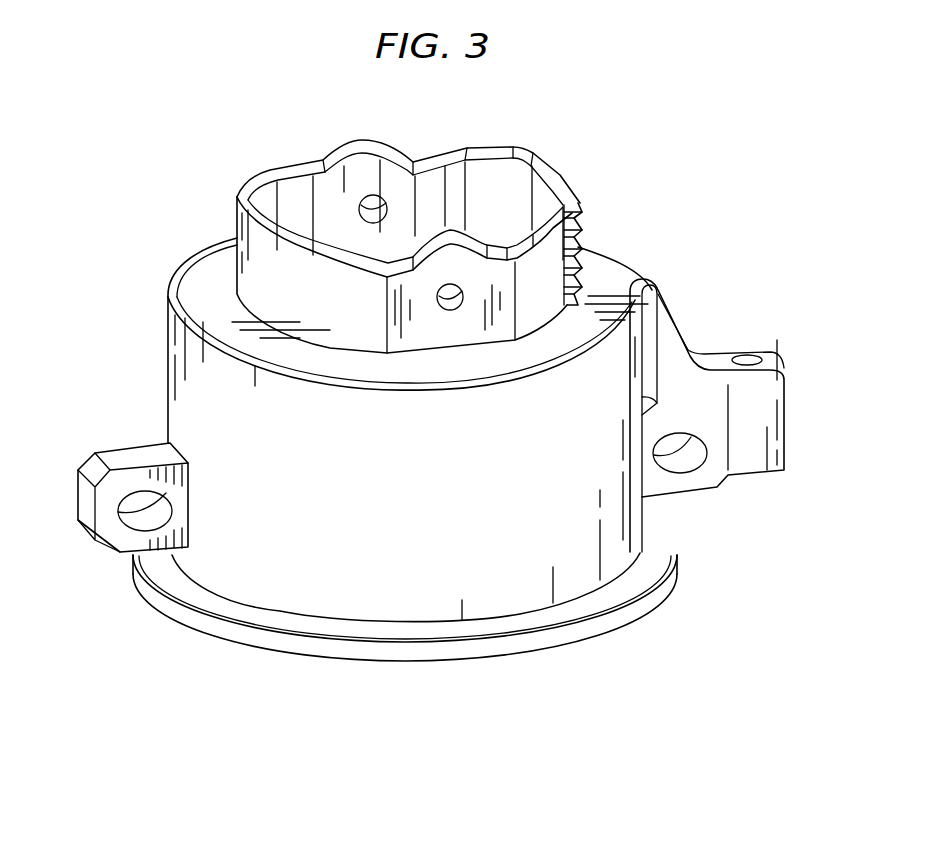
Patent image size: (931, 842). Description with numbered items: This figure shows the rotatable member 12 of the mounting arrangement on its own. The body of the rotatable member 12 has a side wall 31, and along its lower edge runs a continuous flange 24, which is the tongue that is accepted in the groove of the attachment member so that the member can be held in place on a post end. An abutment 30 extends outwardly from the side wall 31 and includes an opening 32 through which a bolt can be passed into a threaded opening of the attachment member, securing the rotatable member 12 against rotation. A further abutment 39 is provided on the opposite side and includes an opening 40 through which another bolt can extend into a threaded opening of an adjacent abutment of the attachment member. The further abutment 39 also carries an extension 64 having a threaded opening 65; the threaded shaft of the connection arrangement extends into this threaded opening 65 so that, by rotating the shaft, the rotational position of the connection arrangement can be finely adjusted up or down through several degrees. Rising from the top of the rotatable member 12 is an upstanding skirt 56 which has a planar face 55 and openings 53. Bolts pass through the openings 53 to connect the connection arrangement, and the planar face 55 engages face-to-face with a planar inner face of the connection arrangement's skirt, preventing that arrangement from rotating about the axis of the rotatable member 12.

The rotatable member 12 is at (418, 506).
The flange 24 is at (650, 597).
The abutment 30 is at (118, 458).
The side wall 31 is at (510, 597).
The opening 32 is at (160, 514).
The further abutment 39 is at (701, 422).
The opening 40 is at (692, 460).
The openings 53 is at (377, 205).
The planar face 55 is at (478, 328).
The upstanding skirt 56 is at (243, 178).
The extension 64 is at (770, 462).
The threaded opening 65 is at (743, 358).